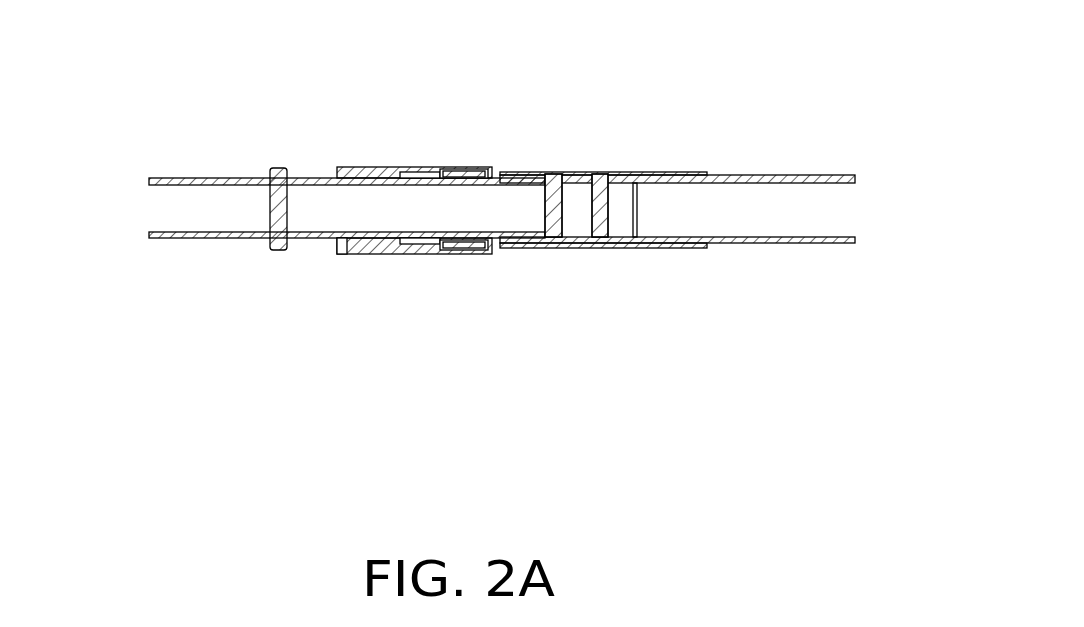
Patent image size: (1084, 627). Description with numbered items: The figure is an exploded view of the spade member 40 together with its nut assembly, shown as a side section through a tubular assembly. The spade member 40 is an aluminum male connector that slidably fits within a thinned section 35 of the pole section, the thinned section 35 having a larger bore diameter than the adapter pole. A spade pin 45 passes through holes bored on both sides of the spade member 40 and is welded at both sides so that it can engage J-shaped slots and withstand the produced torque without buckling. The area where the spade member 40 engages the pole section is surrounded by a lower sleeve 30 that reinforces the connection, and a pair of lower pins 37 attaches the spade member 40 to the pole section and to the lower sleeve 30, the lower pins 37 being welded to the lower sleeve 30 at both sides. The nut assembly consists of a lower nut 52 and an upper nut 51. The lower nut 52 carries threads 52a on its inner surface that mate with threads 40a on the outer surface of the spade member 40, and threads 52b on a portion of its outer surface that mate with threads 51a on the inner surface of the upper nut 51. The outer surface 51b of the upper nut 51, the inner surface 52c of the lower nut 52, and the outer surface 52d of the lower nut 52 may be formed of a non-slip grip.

The lower sleeve 30 is at (677, 151).
The thinned section 35 is at (706, 285).
The lower pins 37 is at (600, 233).
The spade member 40 is at (172, 178).
The threads on outer surface of the spade member 40a is at (407, 244).
The spade pin 45 is at (236, 148).
The upper nut 51 is at (507, 111).
The threads on inner surface of upper nut 51a is at (460, 170).
The outer surface of the upper nut 51b is at (464, 245).
The lower nut 52 is at (397, 166).
The threads on inner surface of the lower nut 52a is at (407, 173).
The threads on outer surface of the lower nut 52b is at (467, 246).
The inner surface of the lower nut 52c is at (387, 246).
The outer surface of the lower nut 52d is at (362, 257).